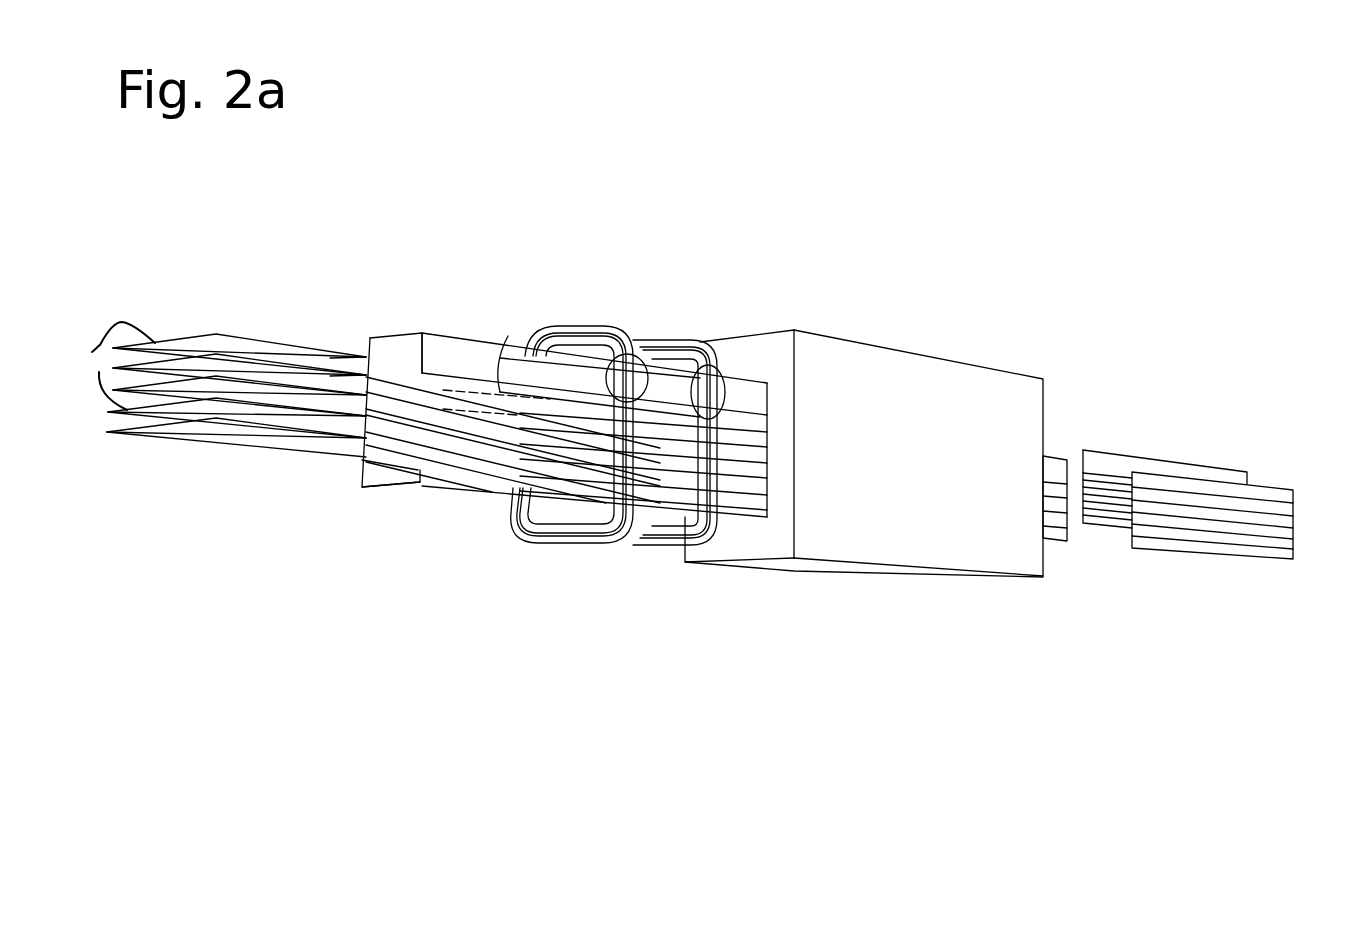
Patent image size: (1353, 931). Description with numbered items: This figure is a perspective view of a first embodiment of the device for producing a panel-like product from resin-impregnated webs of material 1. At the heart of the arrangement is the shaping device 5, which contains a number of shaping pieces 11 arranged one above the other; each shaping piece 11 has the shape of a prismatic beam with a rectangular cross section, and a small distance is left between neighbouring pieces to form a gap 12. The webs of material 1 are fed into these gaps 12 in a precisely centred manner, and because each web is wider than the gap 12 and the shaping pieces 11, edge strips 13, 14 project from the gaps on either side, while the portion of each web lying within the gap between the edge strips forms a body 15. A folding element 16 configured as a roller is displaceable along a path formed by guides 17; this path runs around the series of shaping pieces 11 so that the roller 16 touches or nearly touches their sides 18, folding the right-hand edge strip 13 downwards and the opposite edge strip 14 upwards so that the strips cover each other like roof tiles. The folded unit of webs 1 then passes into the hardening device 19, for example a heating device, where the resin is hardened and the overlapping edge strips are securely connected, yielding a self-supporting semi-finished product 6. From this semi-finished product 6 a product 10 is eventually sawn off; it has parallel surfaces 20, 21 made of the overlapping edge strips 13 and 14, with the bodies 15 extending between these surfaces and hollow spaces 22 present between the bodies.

The webs of material 1 is at (92, 352).
The shaping device 5 is at (817, 325).
The semi-finished product 6 is at (1057, 533).
The product 10 is at (1203, 543).
The shaping pieces 11 is at (382, 480).
The gap 12 is at (488, 398).
The edge strip 13 is at (572, 448).
The edge strip 14 is at (343, 397).
The body 15 is at (421, 373).
The folding element 16 is at (663, 378).
The guides 17 is at (582, 540).
The sides 18 is at (364, 463).
The hardening device 19 is at (945, 397).
The surface 20 is at (1284, 499).
The surface 21 is at (1083, 450).
The hollow spaces 22 is at (1108, 504).